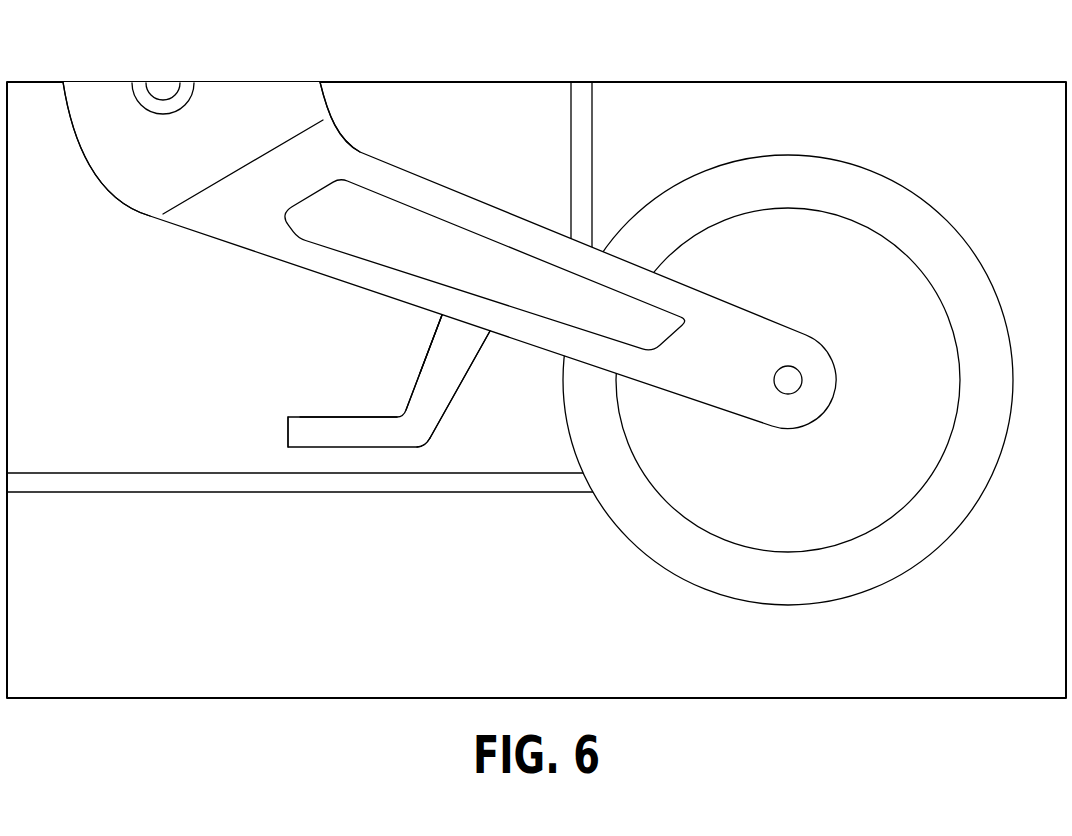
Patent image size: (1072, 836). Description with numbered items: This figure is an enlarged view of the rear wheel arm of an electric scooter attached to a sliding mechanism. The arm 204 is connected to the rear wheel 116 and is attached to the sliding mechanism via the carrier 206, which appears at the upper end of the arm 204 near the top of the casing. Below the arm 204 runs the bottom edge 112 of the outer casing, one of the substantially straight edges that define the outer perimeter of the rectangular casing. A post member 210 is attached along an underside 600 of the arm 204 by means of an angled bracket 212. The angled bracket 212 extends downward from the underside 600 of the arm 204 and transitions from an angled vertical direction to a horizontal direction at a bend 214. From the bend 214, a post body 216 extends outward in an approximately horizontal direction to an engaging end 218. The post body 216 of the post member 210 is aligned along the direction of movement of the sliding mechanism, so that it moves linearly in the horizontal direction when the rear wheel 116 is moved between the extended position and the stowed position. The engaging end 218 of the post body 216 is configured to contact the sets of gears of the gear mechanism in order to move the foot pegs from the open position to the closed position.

The bottom edge 112 is at (173, 493).
The rear wheel 116 is at (787, 606).
The arm 204 is at (480, 199).
The carrier 206 is at (250, 103).
The post member 210 is at (349, 457).
The angled bracket 212 is at (460, 388).
The bend 214 is at (427, 449).
The post body 216 is at (328, 416).
The engaging end 218 is at (278, 428).
The underside 600 is at (438, 317).